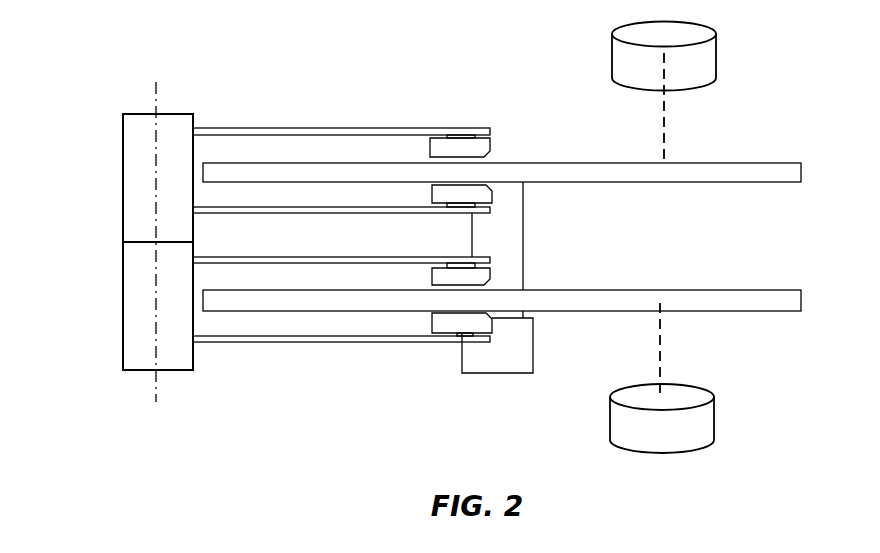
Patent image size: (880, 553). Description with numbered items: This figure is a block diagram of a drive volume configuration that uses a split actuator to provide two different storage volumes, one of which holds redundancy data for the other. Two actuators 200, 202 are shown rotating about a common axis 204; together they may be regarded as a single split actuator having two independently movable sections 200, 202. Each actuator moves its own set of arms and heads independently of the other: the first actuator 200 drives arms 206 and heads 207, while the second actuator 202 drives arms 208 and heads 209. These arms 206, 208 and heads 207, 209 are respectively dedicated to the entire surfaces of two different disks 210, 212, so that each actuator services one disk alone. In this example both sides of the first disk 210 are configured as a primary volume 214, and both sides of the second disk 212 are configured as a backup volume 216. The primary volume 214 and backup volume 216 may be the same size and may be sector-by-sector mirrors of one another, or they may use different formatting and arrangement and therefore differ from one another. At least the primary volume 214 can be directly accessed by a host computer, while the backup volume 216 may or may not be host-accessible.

The actuator 200 is at (123, 172).
The actuator 202 is at (123, 303).
The common axis 204 is at (155, 94).
The arms 206 is at (236, 207).
The heads 207 is at (478, 195).
The arms 208 is at (243, 263).
The heads 209 is at (452, 275).
The disk 210 is at (547, 183).
The disk 212 is at (565, 312).
The primary volume 214 is at (705, 77).
The backup volume 216 is at (703, 432).